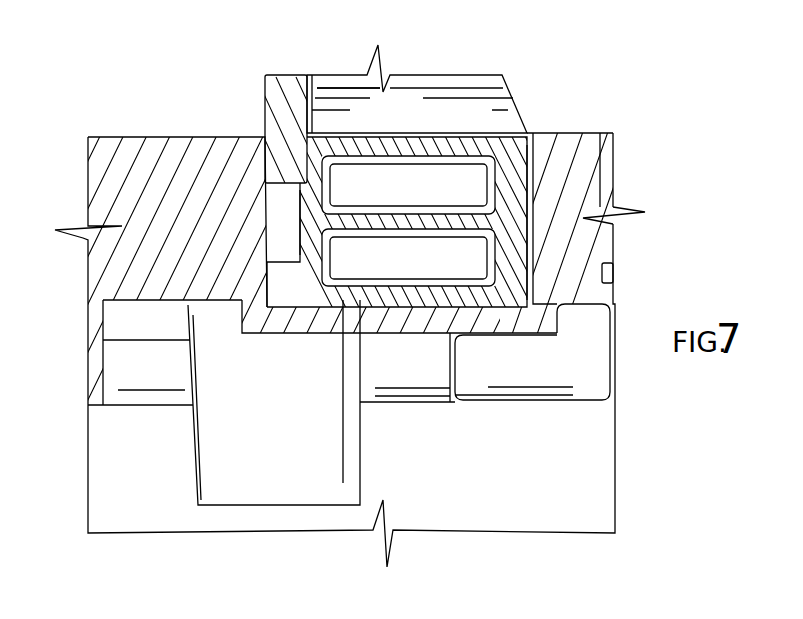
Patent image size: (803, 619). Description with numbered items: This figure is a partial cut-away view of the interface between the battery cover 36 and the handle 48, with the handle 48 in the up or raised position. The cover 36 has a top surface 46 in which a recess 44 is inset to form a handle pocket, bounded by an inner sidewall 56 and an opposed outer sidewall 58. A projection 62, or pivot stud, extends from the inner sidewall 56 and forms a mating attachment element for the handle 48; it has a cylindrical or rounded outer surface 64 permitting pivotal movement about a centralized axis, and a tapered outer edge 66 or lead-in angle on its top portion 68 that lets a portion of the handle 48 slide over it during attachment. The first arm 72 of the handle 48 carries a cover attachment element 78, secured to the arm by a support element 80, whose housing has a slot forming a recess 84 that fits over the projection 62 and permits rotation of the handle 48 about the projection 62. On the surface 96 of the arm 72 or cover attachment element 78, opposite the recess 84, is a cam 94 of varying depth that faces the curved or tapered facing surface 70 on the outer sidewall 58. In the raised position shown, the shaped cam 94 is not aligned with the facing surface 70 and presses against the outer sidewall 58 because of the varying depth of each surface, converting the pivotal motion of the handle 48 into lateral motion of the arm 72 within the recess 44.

The battery cover 36 is at (652, 186).
The recess 44 is at (538, 135).
The top surface 46 is at (127, 137).
The handle 48 is at (278, 80).
The inner sidewall 56 is at (292, 266).
The outer sidewall 58 is at (535, 292).
The projection 62 is at (277, 227).
The outer surface 64 is at (268, 115).
The tapered outer edge 66 is at (300, 197).
The top portion 68 is at (321, 138).
The facing surface 70 is at (552, 295).
The first arm 72 is at (531, 150).
The cover attachment element 78 is at (596, 208).
The support element 80 is at (373, 218).
The recess 84 is at (270, 290).
The cam 94 is at (530, 197).
The surface 96 is at (533, 250).